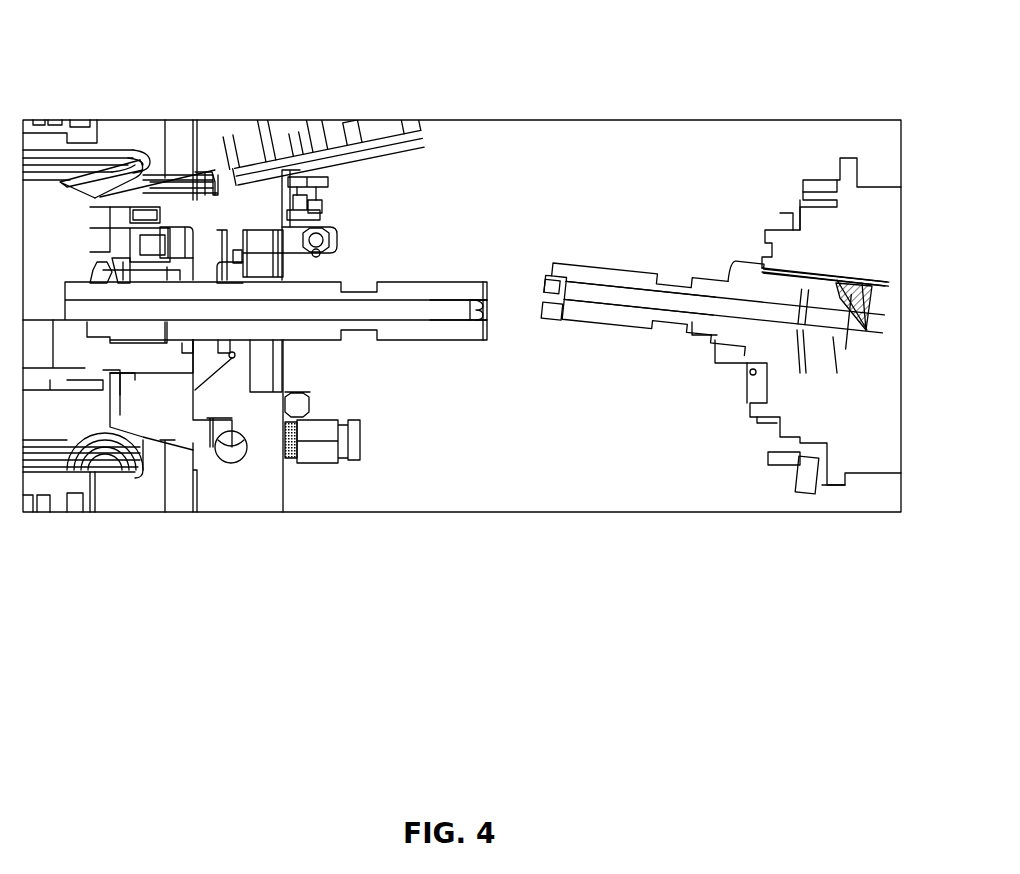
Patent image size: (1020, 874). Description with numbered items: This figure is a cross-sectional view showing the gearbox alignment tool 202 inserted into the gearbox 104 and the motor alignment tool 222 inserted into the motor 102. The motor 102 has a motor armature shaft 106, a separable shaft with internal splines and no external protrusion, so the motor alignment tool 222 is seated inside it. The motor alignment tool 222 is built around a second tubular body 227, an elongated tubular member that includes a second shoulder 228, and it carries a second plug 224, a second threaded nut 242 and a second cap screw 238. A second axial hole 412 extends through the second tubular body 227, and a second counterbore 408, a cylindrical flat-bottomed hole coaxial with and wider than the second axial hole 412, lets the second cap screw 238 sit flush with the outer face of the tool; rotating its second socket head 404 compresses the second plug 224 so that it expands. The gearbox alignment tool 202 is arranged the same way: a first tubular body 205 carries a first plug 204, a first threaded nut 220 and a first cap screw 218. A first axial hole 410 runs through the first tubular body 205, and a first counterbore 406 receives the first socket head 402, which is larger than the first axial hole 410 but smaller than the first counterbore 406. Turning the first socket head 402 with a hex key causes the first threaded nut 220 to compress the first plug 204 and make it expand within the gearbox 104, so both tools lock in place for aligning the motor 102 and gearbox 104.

The motor 102 is at (128, 50).
The gearbox 104 is at (820, 70).
The motor armature shaft 106 is at (196, 238).
The gearbox alignment tool 202 is at (688, 232).
The first plug 204 is at (810, 342).
The first tubular body 205 is at (627, 330).
The first cap screw 218 is at (610, 310).
The first threaded nut 220 is at (843, 343).
The motor alignment tool 222 is at (372, 393).
The second plug 224 is at (130, 273).
The second tubular body 227 is at (413, 281).
The second shoulder 228 is at (227, 260).
The second cap screw 238 is at (432, 300).
The second threaded nut 242 is at (105, 278).
The first socket head 402 is at (545, 305).
The second socket head 404 is at (487, 282).
The first counterbore 406 is at (560, 313).
The second counterbore 408 is at (478, 300).
The first axial hole 410 is at (566, 315).
The second axial hole 412 is at (470, 297).